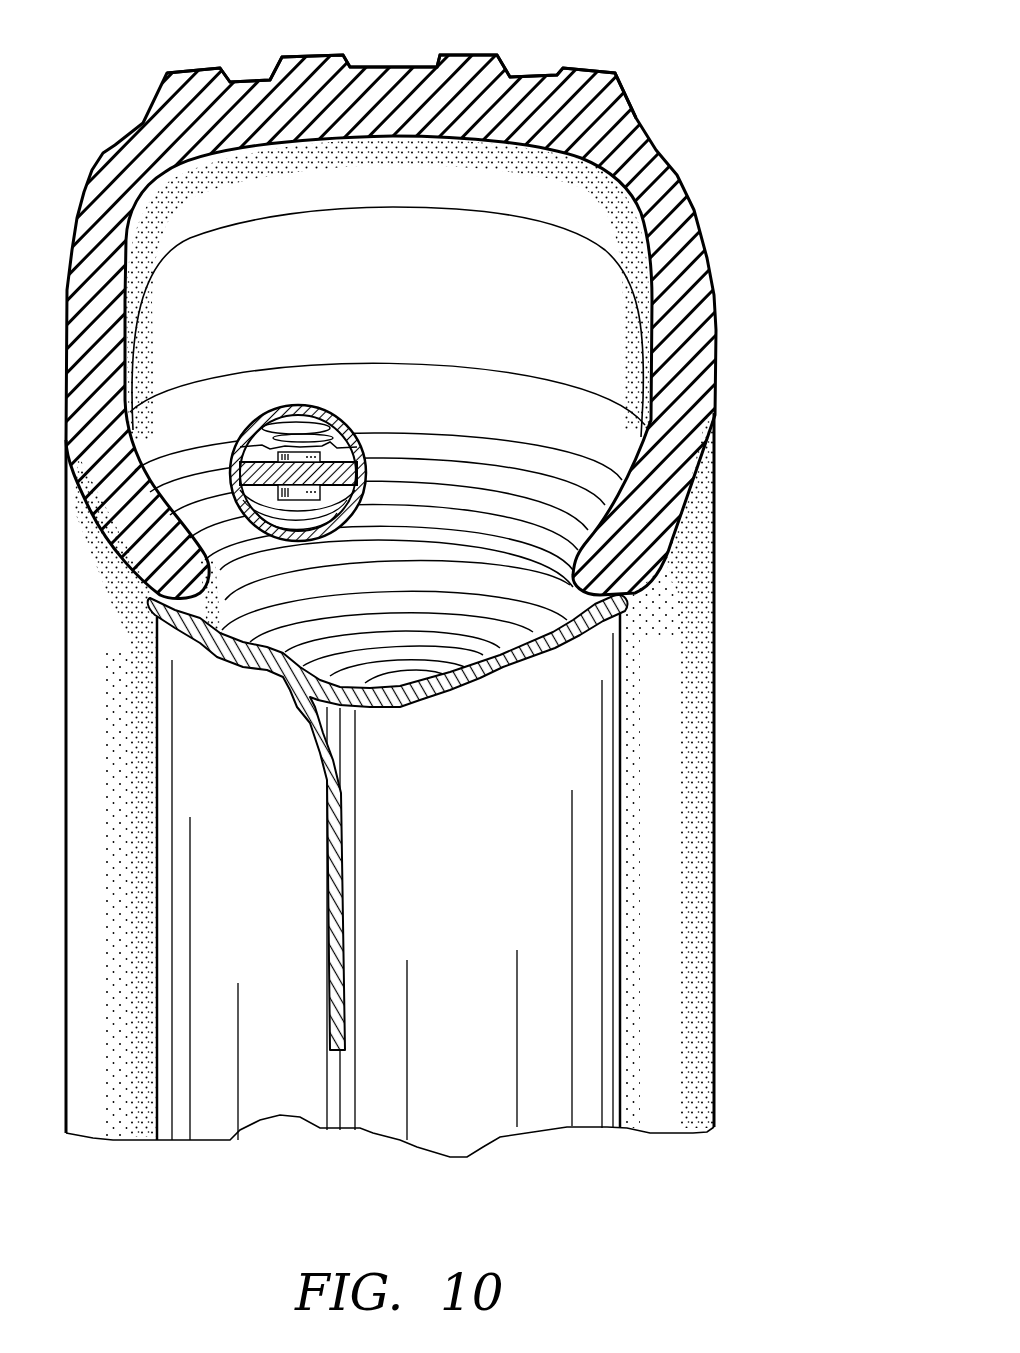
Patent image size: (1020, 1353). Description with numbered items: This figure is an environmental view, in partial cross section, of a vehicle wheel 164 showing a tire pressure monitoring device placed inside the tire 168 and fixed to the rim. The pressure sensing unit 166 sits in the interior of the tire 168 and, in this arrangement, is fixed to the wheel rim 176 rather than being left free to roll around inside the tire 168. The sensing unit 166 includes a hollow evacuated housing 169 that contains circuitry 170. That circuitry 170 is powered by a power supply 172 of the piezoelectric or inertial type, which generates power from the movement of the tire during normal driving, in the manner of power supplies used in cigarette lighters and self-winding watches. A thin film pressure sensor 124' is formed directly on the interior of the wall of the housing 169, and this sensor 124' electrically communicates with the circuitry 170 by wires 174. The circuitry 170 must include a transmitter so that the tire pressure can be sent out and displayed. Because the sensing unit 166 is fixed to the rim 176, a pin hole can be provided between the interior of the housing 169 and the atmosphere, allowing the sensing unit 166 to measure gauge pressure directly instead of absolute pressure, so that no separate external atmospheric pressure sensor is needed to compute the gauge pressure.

The thin film pressure sensor 124' is at (293, 374).
The vehicle wheel 164 is at (722, 348).
The pressure sensing unit 166 is at (350, 413).
The tire 168 is at (638, 118).
The hollow evacuated housing 169 is at (355, 447).
The circuitry 170 is at (360, 482).
The power supply 172 is at (303, 500).
The wires 174 is at (360, 455).
The wheel rim 176 is at (587, 727).